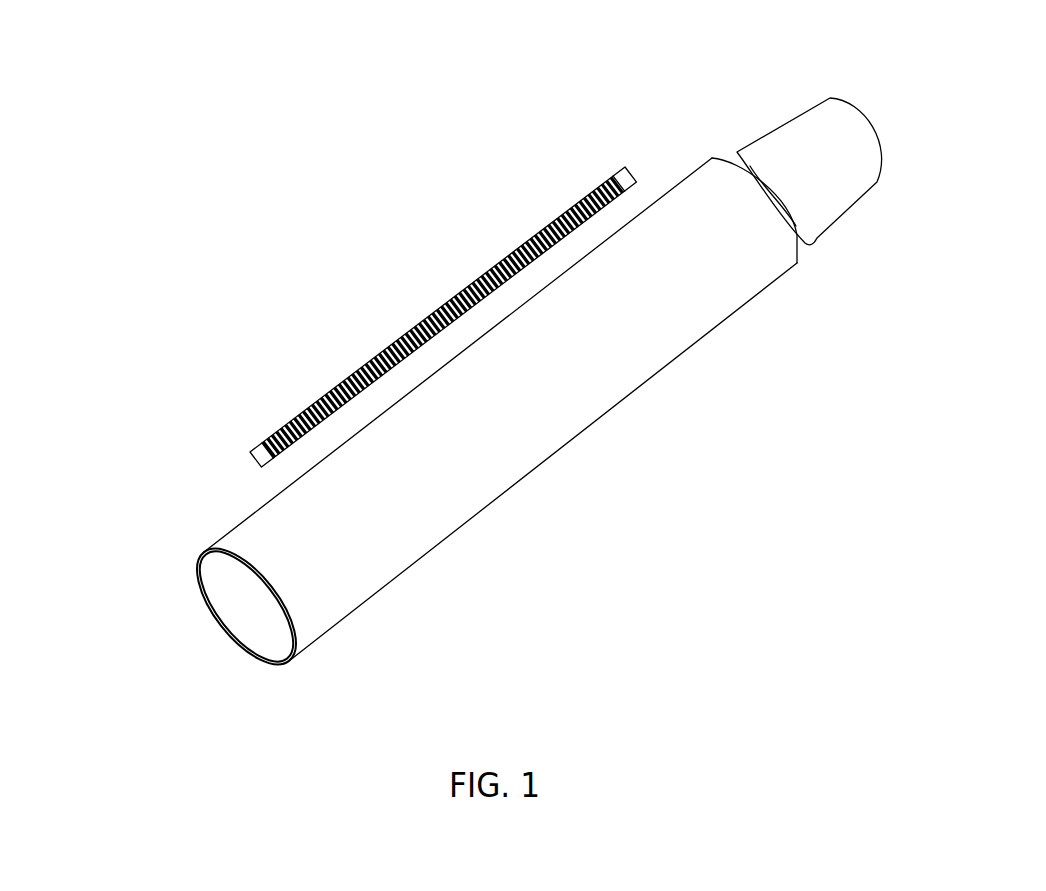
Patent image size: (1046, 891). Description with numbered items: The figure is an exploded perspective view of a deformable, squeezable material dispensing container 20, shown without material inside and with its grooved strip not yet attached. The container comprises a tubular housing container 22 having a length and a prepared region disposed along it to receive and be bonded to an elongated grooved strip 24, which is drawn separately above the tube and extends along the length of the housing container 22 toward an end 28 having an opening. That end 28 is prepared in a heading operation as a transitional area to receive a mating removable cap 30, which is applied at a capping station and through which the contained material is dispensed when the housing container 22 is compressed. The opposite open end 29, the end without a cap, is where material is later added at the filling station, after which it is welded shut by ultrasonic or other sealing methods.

The material dispensing container 20 is at (667, 70).
The tubular housing container 22 is at (622, 413).
The elongated grooved strip 24 is at (405, 318).
The end 28 is at (808, 255).
The open end 29 is at (212, 624).
The removable cap 30 is at (770, 125).